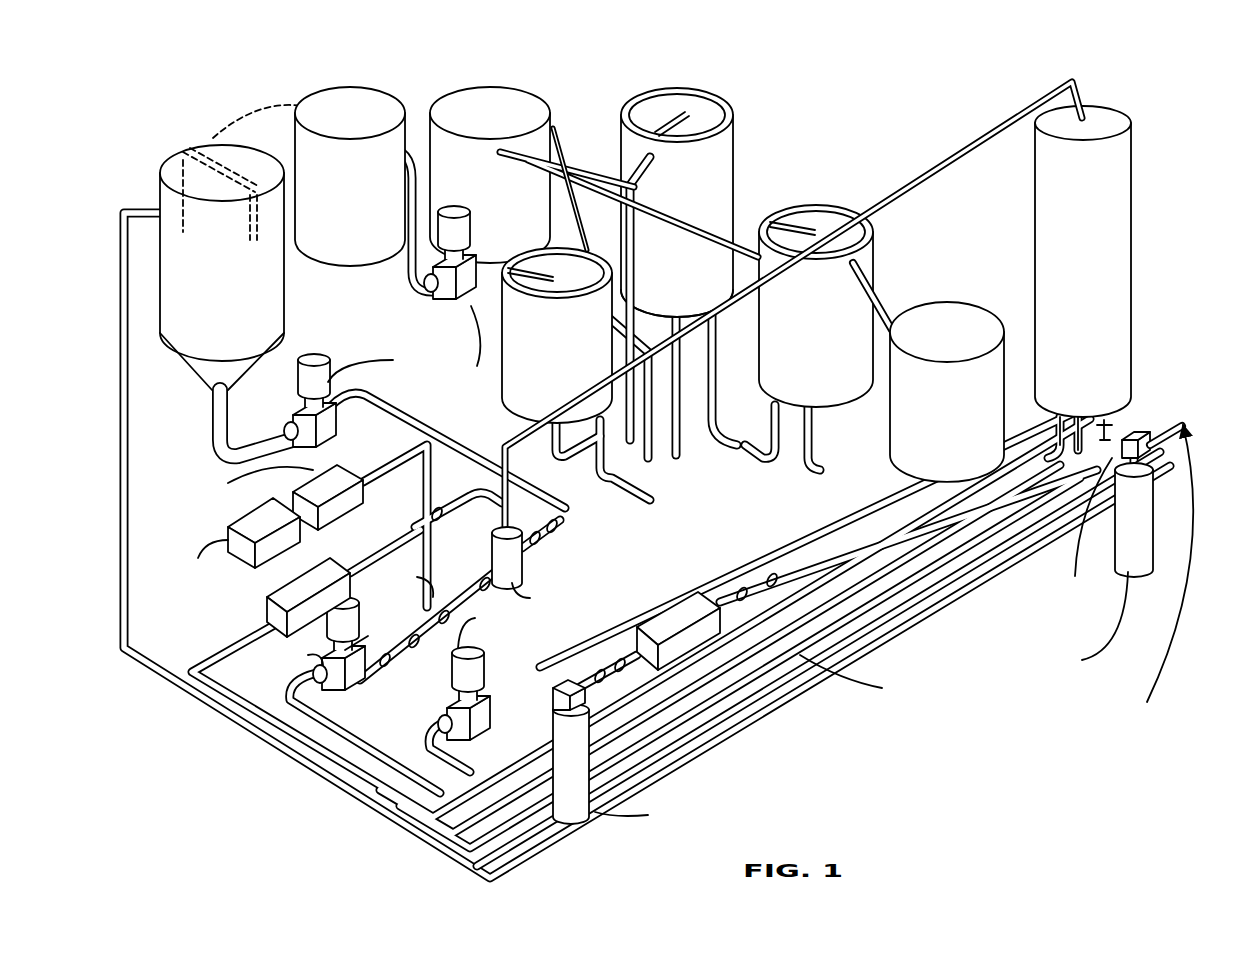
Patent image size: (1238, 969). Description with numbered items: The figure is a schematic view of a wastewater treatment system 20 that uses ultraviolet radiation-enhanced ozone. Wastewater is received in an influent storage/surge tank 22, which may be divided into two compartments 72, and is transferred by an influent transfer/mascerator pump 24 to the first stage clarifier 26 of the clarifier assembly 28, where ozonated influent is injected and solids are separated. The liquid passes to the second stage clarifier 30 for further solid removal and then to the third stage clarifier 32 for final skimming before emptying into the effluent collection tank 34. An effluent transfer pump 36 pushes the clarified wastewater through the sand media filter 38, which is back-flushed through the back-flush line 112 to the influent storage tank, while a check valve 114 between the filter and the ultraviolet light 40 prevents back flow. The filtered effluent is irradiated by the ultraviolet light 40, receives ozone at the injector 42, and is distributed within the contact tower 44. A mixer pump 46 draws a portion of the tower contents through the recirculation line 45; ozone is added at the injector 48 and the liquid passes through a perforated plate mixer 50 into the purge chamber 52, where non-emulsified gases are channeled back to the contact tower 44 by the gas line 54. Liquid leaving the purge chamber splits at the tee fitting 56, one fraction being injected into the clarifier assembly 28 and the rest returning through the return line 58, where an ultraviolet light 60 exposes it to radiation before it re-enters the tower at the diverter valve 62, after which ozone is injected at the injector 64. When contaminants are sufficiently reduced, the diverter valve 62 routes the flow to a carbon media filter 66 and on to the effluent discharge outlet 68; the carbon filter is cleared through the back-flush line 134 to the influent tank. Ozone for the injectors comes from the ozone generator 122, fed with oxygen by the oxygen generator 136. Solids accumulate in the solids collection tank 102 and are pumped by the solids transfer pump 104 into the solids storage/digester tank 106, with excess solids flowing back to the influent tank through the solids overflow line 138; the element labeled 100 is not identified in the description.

The wastewater treatment system 20 is at (660, 466).
The influent storage/surge tank 22 is at (215, 300).
The influent transfer/mascerator pump 24 is at (343, 376).
The first stage clarifier 26 is at (699, 202).
The clarifier assembly 28 is at (712, 216).
The second stage clarifier 30 is at (542, 345).
The third stage clarifier 32 is at (816, 322).
The effluent collection tank 34 is at (921, 372).
The effluent transfer pump 36 is at (487, 672).
The sand media filter 38 is at (646, 768).
The ultraviolet light 40 is at (675, 646).
The injector 42 is at (777, 647).
The contact tower 44 is at (1099, 261).
The recirculation line 45 is at (1060, 411).
The mixer pump 46 is at (317, 657).
The injector 48 is at (401, 618).
The perforated plate mixer 50 is at (449, 600).
The purge chamber 52 is at (531, 563).
The gas line 54 is at (793, 306).
The tee fitting 56 is at (556, 519).
The return line 58 is at (450, 502).
The ultraviolet light 60 is at (315, 582).
The diverter valve 62 is at (1096, 505).
The injector 64 is at (1129, 401).
The carbon media filter 66 is at (1098, 578).
The effluent discharge outlet 68 is at (1109, 543).
The compartments 72 is at (207, 177).
The solids transfer piping 100 is at (629, 186).
The solids collection tank 102 is at (487, 159).
The solids transfer pump 104 is at (425, 312).
The solids storage/digester tank 106 is at (356, 165).
The back-flush line 112 is at (647, 545).
The check valve 114 is at (372, 656).
The ozone generator 122 is at (270, 480).
The back-flush line 134 is at (818, 659).
The oxygen generator 136 is at (222, 553).
The solids overflow line 138 is at (272, 108).